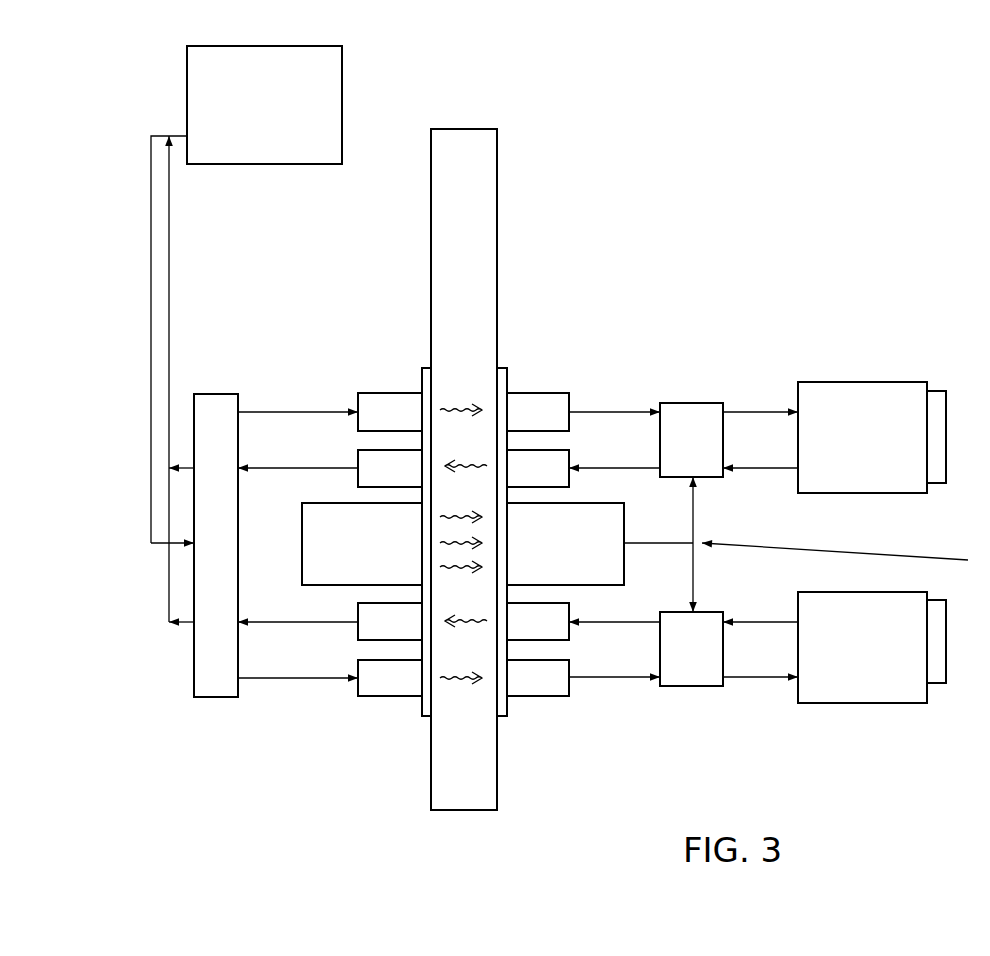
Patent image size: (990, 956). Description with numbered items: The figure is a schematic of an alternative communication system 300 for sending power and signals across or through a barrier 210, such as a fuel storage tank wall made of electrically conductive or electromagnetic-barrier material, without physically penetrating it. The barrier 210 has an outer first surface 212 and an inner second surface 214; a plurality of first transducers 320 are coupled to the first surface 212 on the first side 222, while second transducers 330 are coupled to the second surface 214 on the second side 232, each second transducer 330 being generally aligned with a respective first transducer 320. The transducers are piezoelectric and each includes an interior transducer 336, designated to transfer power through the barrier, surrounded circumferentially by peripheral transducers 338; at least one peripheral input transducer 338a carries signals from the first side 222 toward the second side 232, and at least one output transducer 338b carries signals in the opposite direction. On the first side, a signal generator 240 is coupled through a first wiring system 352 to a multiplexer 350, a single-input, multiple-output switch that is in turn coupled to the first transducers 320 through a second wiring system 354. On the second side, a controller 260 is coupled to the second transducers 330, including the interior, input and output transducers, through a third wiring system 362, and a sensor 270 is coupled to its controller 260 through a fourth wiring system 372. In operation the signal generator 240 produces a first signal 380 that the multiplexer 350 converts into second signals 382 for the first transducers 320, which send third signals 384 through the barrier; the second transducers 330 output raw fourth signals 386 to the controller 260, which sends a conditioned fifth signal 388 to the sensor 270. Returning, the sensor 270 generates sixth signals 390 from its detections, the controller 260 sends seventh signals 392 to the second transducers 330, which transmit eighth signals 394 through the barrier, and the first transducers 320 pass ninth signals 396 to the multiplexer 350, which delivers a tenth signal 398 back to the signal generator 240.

The barrier 210 is at (481, 797).
The first surface 212 is at (426, 792).
The second surface 214 is at (504, 772).
The first side 222 is at (246, 757).
The second side 232 is at (671, 769).
The signal generator 240 is at (284, 153).
The controller 260 is at (697, 402).
The sensor 270 is at (898, 397).
The communication system 300 is at (823, 775).
The first transducers 320 is at (389, 698).
The second transducers 330 is at (538, 698).
The interior transducer 336 is at (318, 583).
The peripheral transducers 338 is at (377, 620).
The input transducer 338a is at (384, 402).
The output transducer 338b is at (377, 470).
The multiplexer 350 is at (214, 393).
The first wiring system 352 is at (180, 317).
The second wiring system 354 is at (284, 400).
The third wiring system 362 is at (611, 407).
The fourth wiring system 372 is at (778, 408).
The first signal 380 is at (160, 548).
The second signals 382 is at (316, 418).
The third signal 384 is at (462, 413).
The fourth signals 386 is at (632, 416).
The fifth signal 388 is at (770, 418).
The sixth signals 390 is at (760, 473).
The seventh signals 392 is at (638, 474).
The eighth signals 394 is at (462, 475).
The ninth signals 396 is at (257, 472).
The tenth signal 398 is at (172, 150).